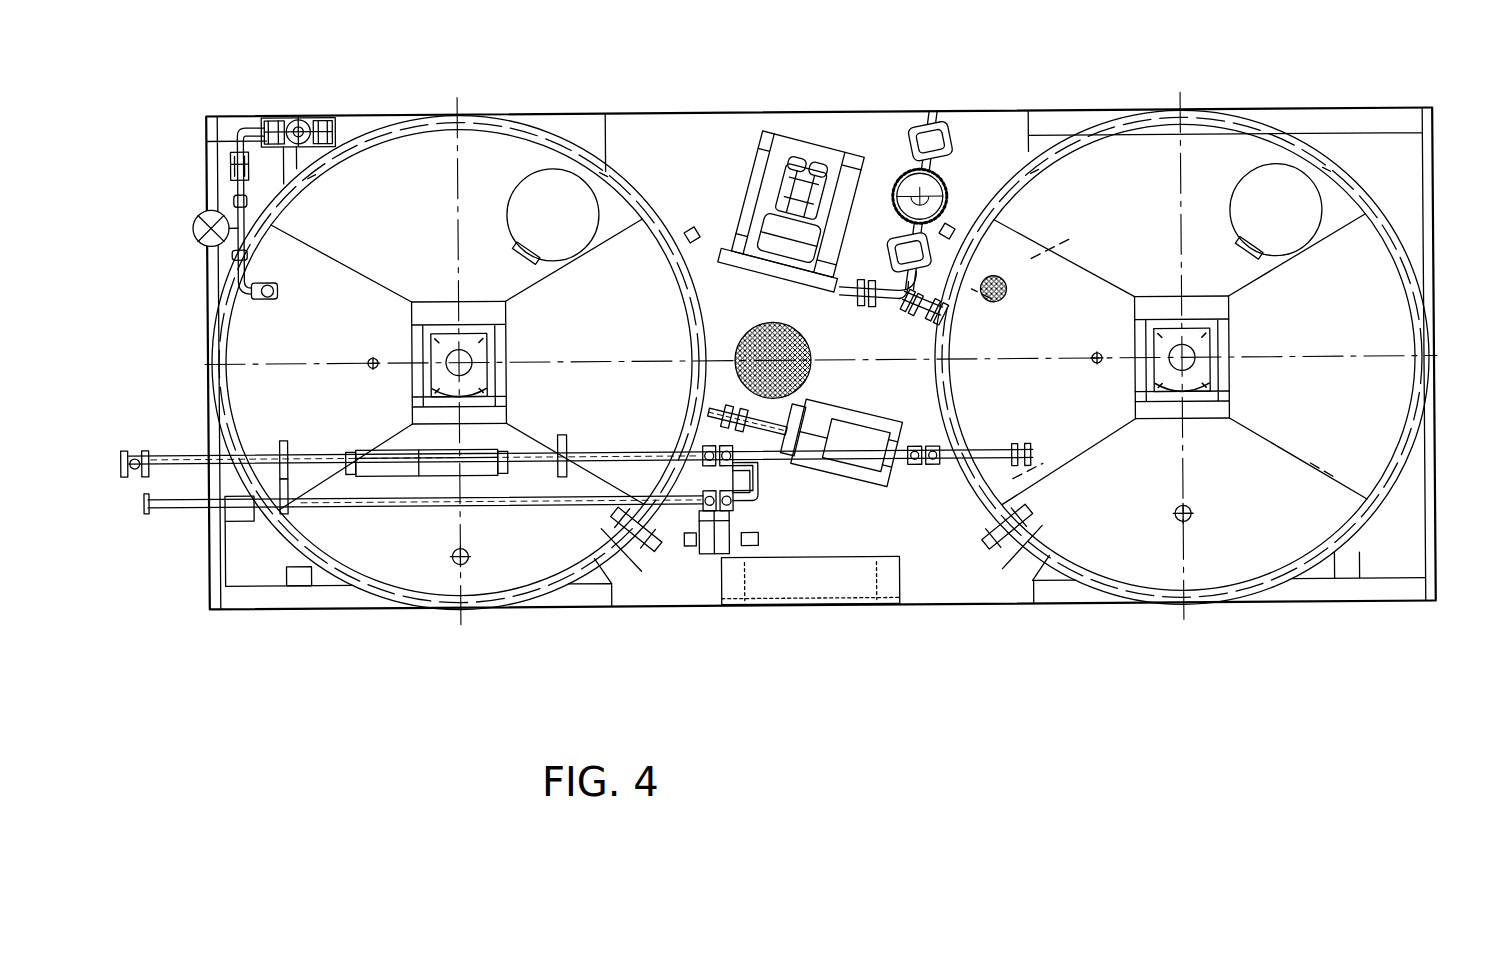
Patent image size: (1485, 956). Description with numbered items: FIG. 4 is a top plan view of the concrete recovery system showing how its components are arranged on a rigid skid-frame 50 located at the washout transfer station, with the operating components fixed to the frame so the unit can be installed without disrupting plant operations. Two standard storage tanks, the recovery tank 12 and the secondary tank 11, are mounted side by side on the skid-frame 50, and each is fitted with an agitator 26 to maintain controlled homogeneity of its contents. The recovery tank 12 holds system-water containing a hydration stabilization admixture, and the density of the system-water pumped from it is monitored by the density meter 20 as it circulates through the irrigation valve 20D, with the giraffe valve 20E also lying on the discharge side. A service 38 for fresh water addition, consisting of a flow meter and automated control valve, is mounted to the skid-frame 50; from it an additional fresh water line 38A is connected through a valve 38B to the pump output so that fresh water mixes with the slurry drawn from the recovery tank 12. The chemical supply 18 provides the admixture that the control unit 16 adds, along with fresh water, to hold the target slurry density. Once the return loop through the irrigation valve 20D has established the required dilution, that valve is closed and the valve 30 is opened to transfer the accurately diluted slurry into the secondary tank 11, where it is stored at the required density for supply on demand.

The secondary tank 11 is at (1157, 605).
The recovery tank 12 is at (437, 604).
The control unit 16 is at (820, 580).
The chemical supply 18 is at (339, 114).
The density meter 20 is at (853, 472).
The irrigation valve 20D is at (683, 437).
The giraffe valve 20E is at (132, 437).
The agitator 26 is at (470, 358).
The transfer valve 30 is at (937, 426).
The batch water supply 38 is at (145, 497).
The fresh water line 38A is at (355, 508).
The valve 38B is at (695, 510).
The skid-frame 50 is at (674, 112).